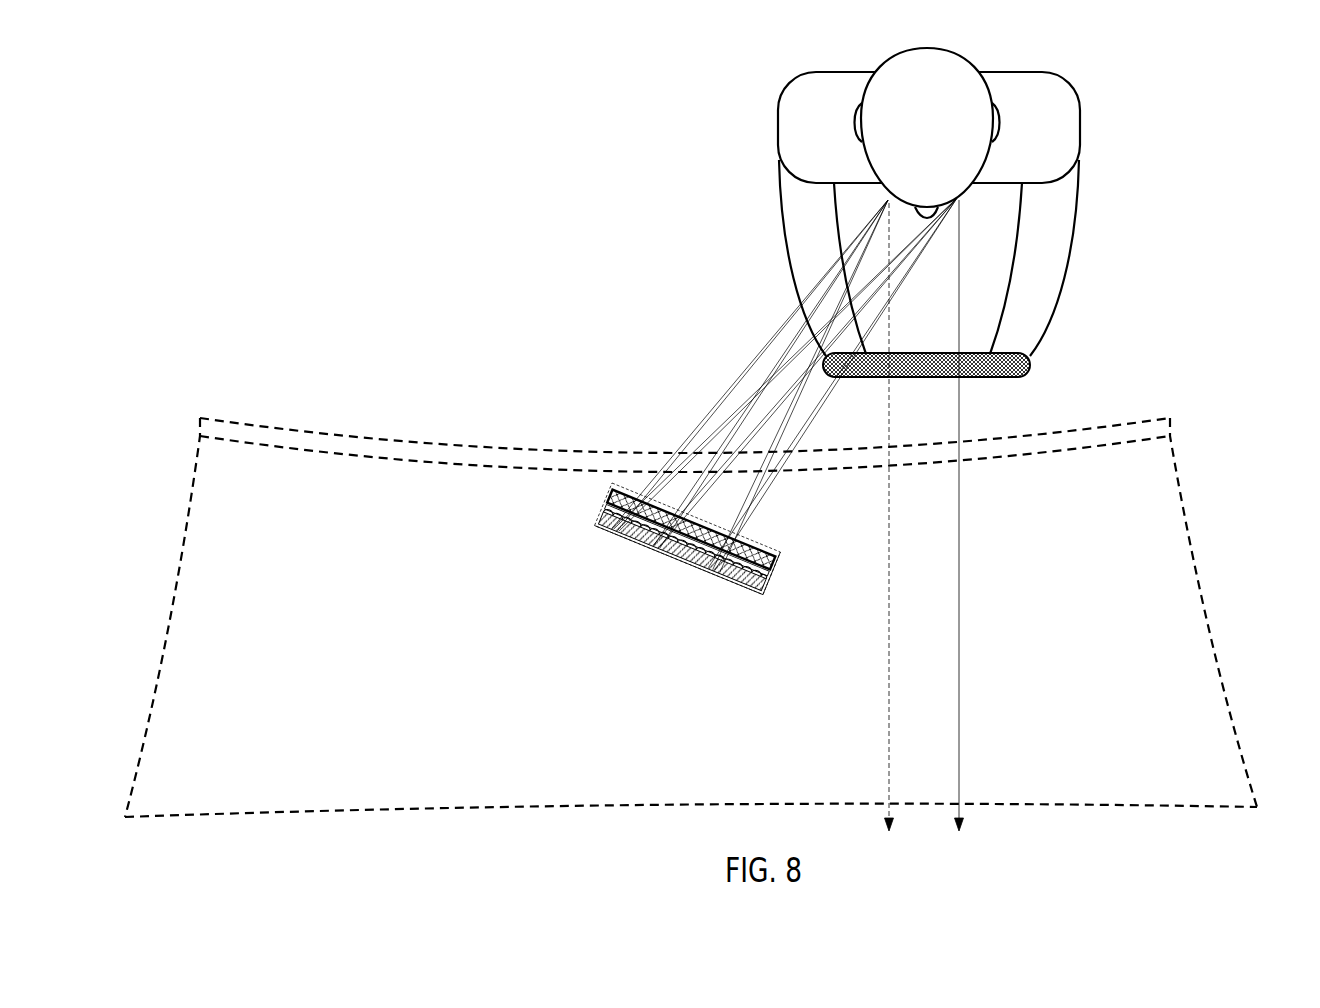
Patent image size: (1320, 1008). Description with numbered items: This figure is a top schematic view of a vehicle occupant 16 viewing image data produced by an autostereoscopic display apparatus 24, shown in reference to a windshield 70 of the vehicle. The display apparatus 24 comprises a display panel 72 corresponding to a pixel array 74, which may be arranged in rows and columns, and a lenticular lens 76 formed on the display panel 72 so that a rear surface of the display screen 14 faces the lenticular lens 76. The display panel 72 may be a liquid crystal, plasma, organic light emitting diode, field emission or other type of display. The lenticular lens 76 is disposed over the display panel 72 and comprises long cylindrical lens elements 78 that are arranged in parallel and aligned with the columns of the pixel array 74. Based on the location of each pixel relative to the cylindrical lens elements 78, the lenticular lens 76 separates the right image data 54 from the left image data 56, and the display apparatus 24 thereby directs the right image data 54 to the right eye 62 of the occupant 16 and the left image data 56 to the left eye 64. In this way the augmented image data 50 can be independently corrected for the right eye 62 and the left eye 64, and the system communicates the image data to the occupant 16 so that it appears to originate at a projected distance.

The display screen 14 is at (644, 542).
The occupant 16 is at (818, 98).
The display apparatus 24 is at (576, 504).
The augmented image data 50 is at (637, 605).
The right image data 54 is at (622, 562).
The left image data 56 is at (698, 591).
The right eye 62 is at (902, 193).
The left eye 64 is at (955, 193).
The windshield 70 is at (1157, 528).
The display panel 72 is at (739, 587).
The pixel array 74 is at (765, 592).
The lenticular lens 76 is at (771, 576).
The cylindrical lens elements 78 is at (773, 564).